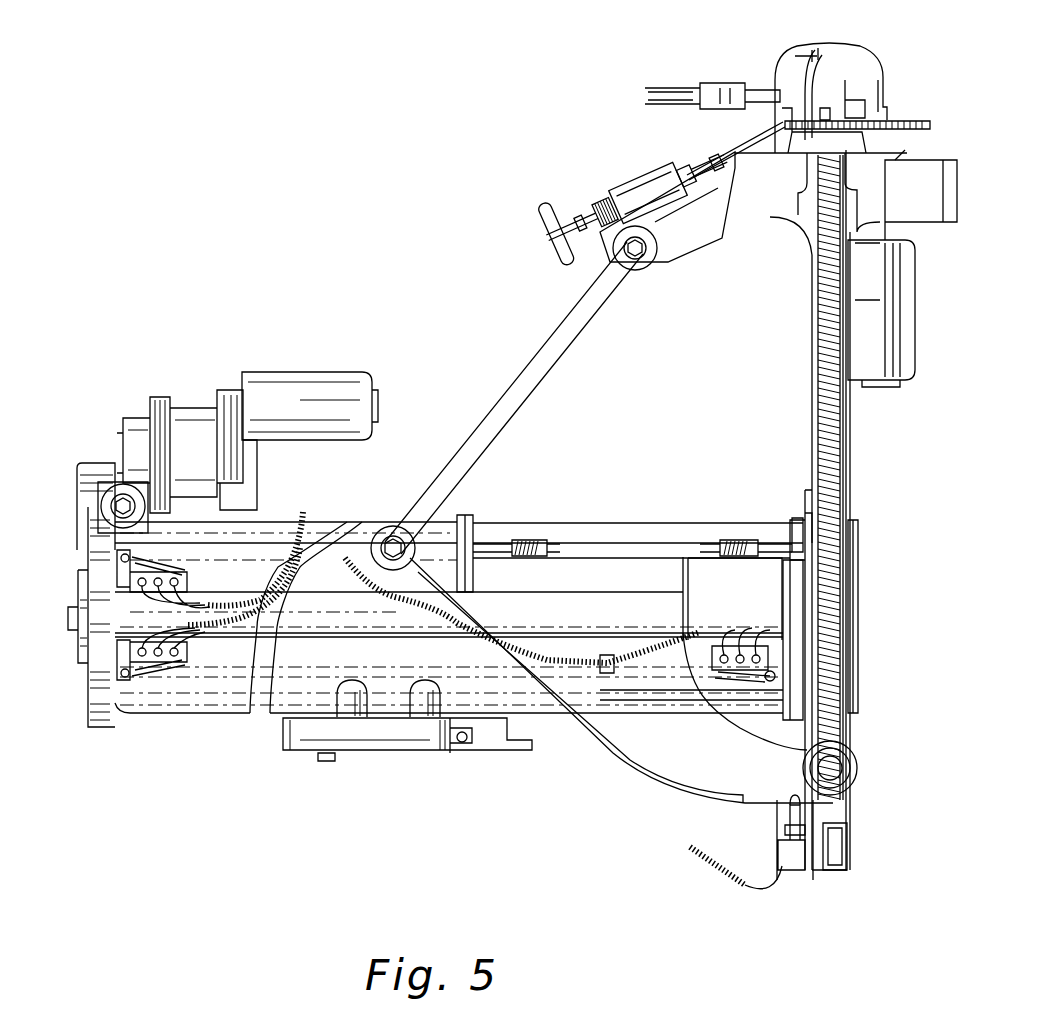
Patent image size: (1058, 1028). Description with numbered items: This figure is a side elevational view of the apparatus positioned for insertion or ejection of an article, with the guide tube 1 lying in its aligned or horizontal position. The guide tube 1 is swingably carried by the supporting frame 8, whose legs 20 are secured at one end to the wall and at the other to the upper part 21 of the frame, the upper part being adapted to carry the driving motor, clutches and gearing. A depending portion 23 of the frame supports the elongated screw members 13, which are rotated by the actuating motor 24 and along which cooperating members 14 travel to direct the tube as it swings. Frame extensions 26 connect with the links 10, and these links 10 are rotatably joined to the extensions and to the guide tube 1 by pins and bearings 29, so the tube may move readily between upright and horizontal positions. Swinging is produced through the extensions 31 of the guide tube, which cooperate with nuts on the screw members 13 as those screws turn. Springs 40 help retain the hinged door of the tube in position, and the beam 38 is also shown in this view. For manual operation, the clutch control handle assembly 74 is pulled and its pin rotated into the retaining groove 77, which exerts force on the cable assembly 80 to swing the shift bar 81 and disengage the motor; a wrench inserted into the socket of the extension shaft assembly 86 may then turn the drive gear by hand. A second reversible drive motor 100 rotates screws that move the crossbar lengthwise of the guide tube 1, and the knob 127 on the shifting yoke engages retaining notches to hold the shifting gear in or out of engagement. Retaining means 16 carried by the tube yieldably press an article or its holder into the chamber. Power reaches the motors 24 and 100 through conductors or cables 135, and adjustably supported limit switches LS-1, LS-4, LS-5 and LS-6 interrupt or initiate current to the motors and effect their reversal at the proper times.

The guide tube 1 is at (268, 715).
The supporting frame 8 is at (848, 417).
The link means 10 is at (547, 372).
The elongated screw members 13 is at (820, 341).
The cooperating or complementary members 14 is at (856, 770).
The retaining means 16 is at (395, 740).
The legs 20 is at (930, 212).
The upper part of supporting frame member 21 is at (905, 158).
The depending portion of the supporting frame 23 is at (848, 454).
The actuating motor 24 is at (882, 309).
The frame extensions 26 is at (776, 208).
The pins and bearings 29 is at (637, 268).
The extensions 31 is at (682, 768).
The beam 38 is at (644, 525).
The springs 40 is at (520, 540).
The clutch control handle assembly 74 is at (620, 195).
The retaining groove 77 is at (584, 208).
The cable assembly 80 is at (770, 132).
The shift bar 81 is at (822, 50).
The extension shaft assembly 86 is at (686, 90).
The reversible drive motor 100 is at (292, 382).
The knob 127 is at (118, 487).
The conductors or cables 135 is at (316, 512).
The limit switch LS-1 is at (790, 868).
The limit switch LS-4 is at (188, 582).
The limit switch LS-5 is at (187, 652).
The limit switch LS-6 is at (714, 662).